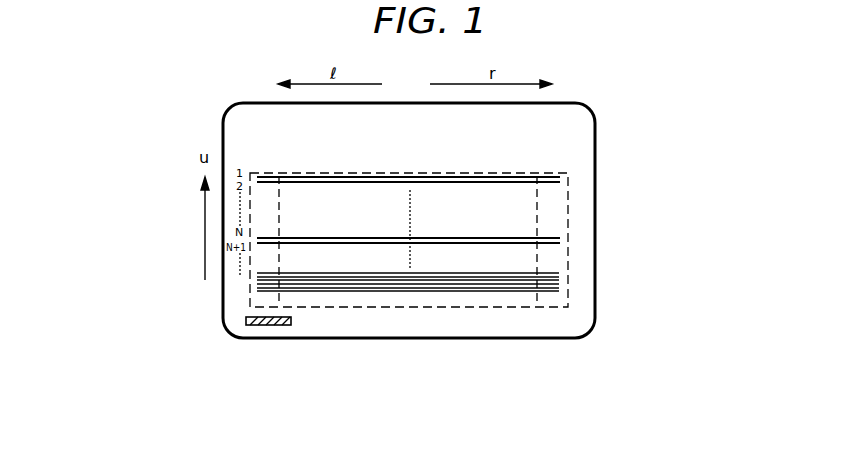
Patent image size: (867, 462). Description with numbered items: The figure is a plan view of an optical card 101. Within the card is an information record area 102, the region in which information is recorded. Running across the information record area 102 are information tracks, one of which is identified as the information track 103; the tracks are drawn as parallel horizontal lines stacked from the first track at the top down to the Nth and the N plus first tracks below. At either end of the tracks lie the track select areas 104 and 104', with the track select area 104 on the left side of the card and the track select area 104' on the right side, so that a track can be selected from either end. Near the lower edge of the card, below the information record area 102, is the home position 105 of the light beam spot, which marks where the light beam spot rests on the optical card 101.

The optical card 101 is at (595, 150).
The information record area 102 is at (386, 192).
The information track 103 is at (547, 238).
The track select area 104 is at (349, 280).
The track select area 104' is at (657, 252).
The home position 105 is at (283, 325).